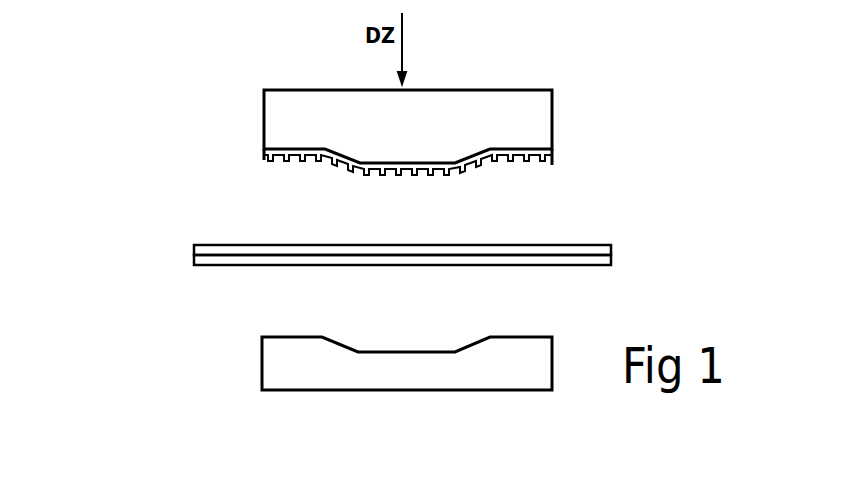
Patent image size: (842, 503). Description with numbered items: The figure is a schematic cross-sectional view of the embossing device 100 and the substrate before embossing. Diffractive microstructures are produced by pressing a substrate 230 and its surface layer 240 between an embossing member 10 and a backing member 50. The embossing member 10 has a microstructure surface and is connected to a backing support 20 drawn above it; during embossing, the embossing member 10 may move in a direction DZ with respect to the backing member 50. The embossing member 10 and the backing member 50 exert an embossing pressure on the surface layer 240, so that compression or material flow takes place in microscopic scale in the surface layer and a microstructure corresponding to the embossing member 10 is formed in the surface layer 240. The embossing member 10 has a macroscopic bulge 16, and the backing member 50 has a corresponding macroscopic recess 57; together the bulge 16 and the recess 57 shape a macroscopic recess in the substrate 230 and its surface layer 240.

The embossing device 100 is at (157, 345).
The backing support 20 is at (264, 103).
The embossing member 10 is at (264, 150).
The macroscopic bulge 16 is at (485, 183).
The surface layer 240 is at (194, 252).
The substrate 230 is at (194, 258).
The macroscopic recess 57 is at (483, 322).
The backing member 50 is at (262, 378).